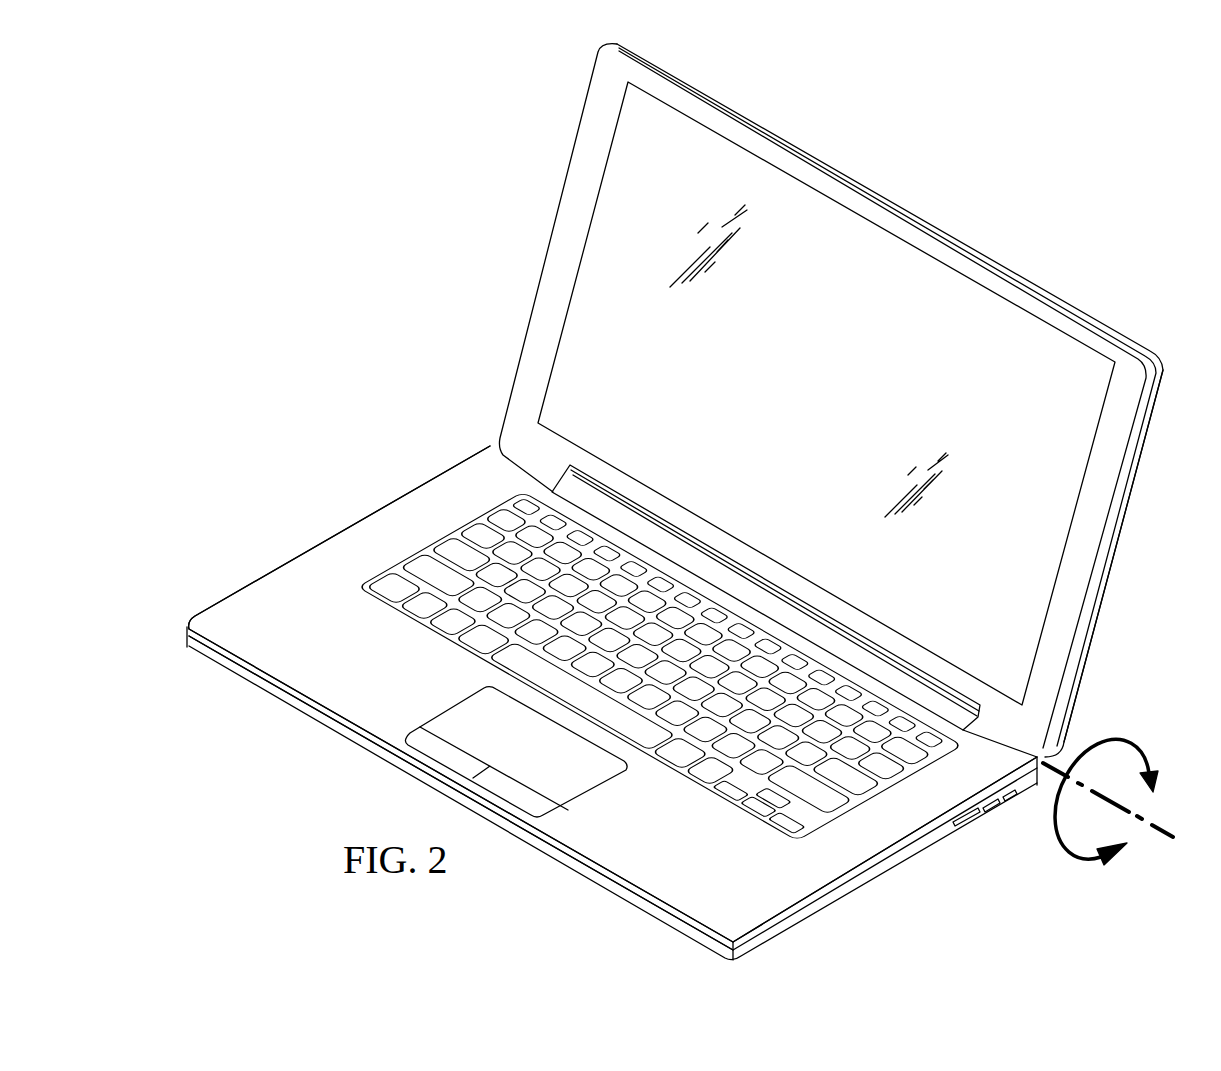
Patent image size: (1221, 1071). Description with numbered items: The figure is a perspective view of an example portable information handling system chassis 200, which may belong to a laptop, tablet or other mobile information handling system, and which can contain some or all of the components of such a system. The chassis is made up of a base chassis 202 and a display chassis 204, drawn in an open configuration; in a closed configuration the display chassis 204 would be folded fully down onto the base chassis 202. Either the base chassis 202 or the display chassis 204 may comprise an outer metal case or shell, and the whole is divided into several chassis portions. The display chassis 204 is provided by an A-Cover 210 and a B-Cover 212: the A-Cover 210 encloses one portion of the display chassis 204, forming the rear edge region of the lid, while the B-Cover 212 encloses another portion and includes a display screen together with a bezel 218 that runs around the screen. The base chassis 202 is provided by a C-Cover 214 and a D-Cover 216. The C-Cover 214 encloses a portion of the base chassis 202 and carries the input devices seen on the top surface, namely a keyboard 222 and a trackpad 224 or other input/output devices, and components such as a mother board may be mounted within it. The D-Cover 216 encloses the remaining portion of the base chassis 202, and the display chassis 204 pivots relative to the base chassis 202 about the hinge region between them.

The portable information handling system chassis 200 is at (1103, 191).
The base chassis 202 is at (527, 314).
The display chassis 204 is at (1144, 585).
The A-Cover 210 is at (1134, 491).
The B-Cover 212 is at (1088, 333).
The C-Cover 214 is at (262, 598).
The D-Cover 216 is at (905, 268).
The bezel 218 is at (757, 121).
The keyboard 222 is at (484, 519).
The trackpad 224 is at (582, 783).